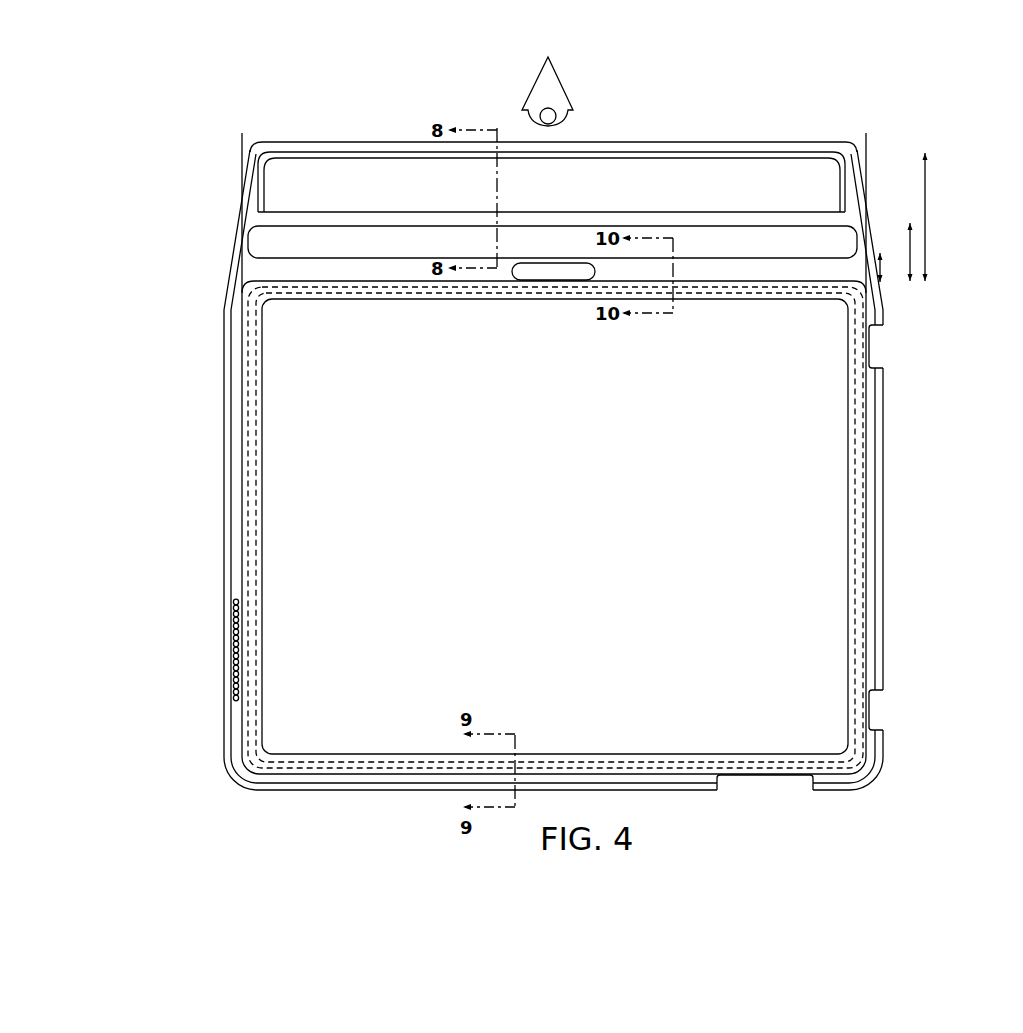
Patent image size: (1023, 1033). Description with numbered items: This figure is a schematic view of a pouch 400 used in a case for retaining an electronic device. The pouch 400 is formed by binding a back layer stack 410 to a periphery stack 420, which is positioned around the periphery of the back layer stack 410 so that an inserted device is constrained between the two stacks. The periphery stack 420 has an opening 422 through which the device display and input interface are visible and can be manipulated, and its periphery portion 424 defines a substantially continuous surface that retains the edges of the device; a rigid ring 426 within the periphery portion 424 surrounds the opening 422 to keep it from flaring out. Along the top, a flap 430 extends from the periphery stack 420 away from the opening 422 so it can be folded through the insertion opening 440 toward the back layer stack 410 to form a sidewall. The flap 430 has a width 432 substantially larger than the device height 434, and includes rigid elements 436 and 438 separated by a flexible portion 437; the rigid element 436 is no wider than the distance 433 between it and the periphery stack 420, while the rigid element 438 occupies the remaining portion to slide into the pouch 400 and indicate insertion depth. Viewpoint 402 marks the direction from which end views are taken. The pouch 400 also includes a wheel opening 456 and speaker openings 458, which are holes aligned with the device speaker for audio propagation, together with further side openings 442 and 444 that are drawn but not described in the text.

The pouch element 400 is at (734, 113).
The viewpoint 402 is at (557, 103).
The back layer stack 410 is at (573, 516).
The periphery stack 420 is at (240, 533).
The opening 422 is at (283, 402).
The periphery portion 424 is at (245, 301).
The rigid ring 426 is at (250, 592).
The flap 430 is at (282, 219).
The width 432 is at (930, 228).
The distance 433 is at (911, 245).
The height 434 is at (880, 255).
The rigid element 436 is at (412, 170).
The flexible portion 437 is at (352, 218).
The rigid element 438 is at (258, 243).
The opening 440 is at (537, 268).
The side notch 442 is at (868, 350).
The side notch 444 is at (868, 707).
The wheel opening 456 is at (772, 777).
The speaker openings 458 is at (235, 692).